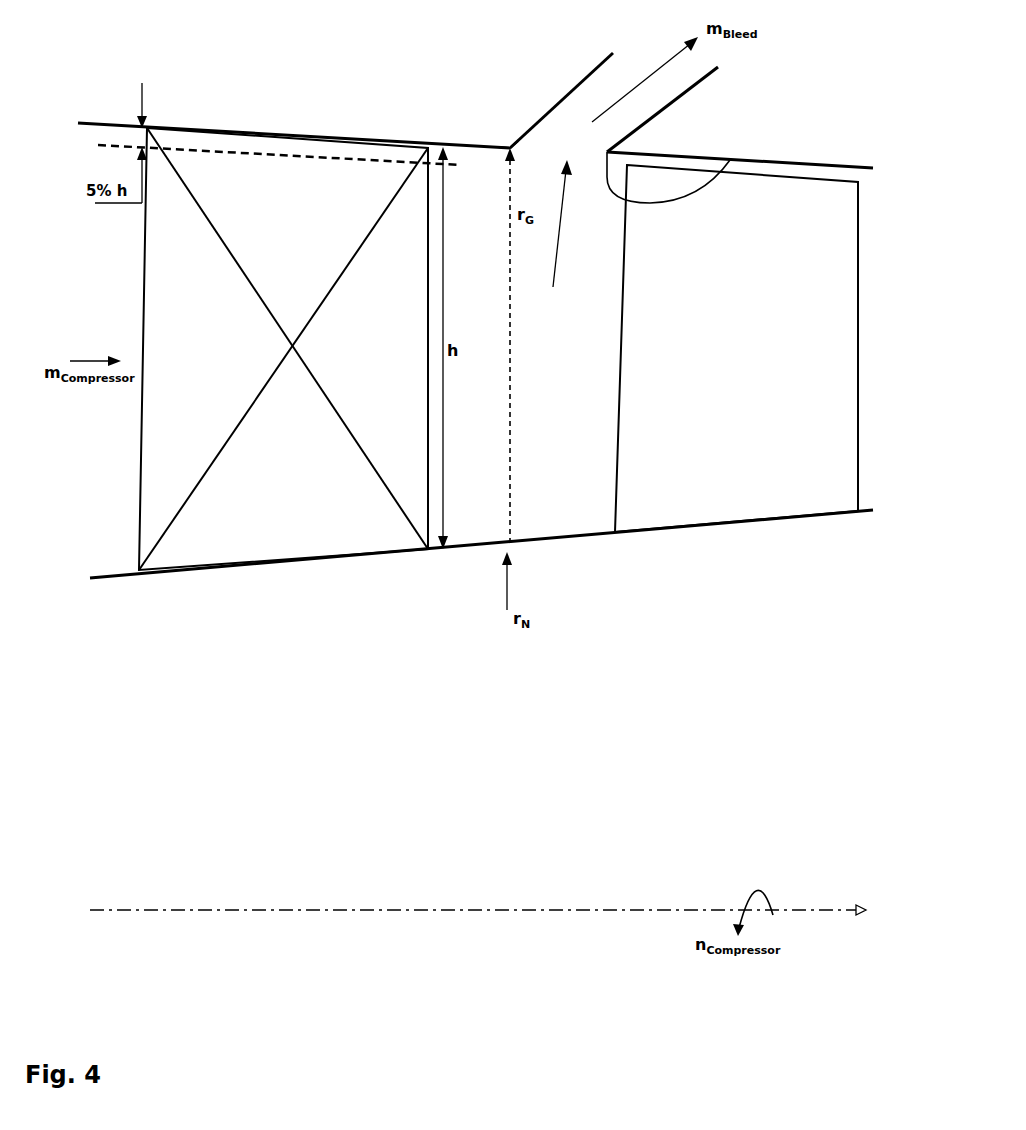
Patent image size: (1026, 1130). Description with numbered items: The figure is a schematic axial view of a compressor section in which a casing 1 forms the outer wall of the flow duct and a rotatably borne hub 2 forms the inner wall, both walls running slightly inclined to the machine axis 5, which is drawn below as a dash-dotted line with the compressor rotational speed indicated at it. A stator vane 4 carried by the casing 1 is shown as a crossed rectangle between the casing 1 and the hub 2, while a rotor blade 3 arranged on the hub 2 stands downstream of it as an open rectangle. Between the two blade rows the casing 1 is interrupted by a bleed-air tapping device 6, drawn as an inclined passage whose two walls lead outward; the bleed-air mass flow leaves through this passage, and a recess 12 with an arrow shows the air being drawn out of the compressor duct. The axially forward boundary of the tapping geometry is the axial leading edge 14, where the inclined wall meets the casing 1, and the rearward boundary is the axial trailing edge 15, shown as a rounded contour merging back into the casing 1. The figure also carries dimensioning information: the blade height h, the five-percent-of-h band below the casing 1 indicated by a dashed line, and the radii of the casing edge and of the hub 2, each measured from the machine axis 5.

The casing 1 is at (100, 123).
The hub 2 is at (203, 568).
The rotor blade 3 is at (725, 503).
The stator vane 4 is at (315, 532).
The machine axis 5 is at (478, 892).
The bleed-air tapping device 6 is at (577, 85).
The recess 12 is at (555, 238).
The axial leading edge 14 is at (510, 146).
The axial trailing edge 15 is at (730, 160).